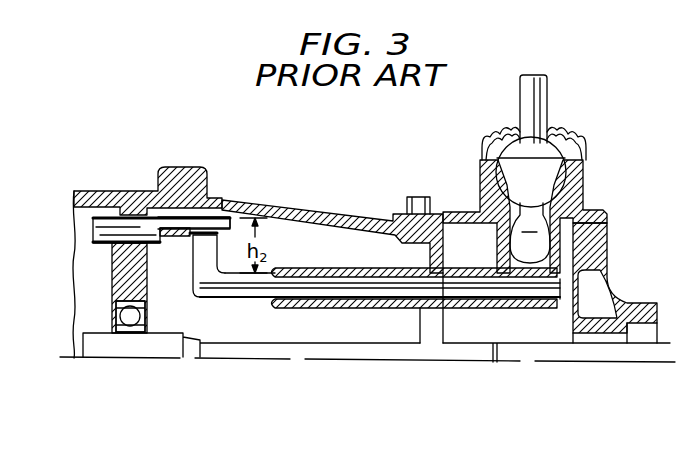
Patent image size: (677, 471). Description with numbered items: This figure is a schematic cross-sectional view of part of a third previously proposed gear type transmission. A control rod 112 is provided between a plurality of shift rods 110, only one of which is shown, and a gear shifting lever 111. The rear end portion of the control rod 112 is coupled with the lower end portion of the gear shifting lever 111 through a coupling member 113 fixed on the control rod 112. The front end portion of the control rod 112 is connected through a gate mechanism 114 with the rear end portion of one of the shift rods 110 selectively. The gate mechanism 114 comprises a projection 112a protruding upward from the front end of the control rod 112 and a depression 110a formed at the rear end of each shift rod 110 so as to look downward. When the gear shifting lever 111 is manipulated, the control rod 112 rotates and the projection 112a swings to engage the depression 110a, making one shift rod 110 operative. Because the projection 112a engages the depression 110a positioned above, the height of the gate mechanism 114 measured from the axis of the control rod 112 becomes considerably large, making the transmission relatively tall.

The shift rod 110 is at (105, 222).
The depression 110a is at (216, 220).
The gear shifting lever 111 is at (547, 94).
The control rod 112 is at (341, 285).
The projection 112a is at (203, 243).
The coupling member 113 is at (492, 228).
The gate mechanism 114 is at (187, 204).